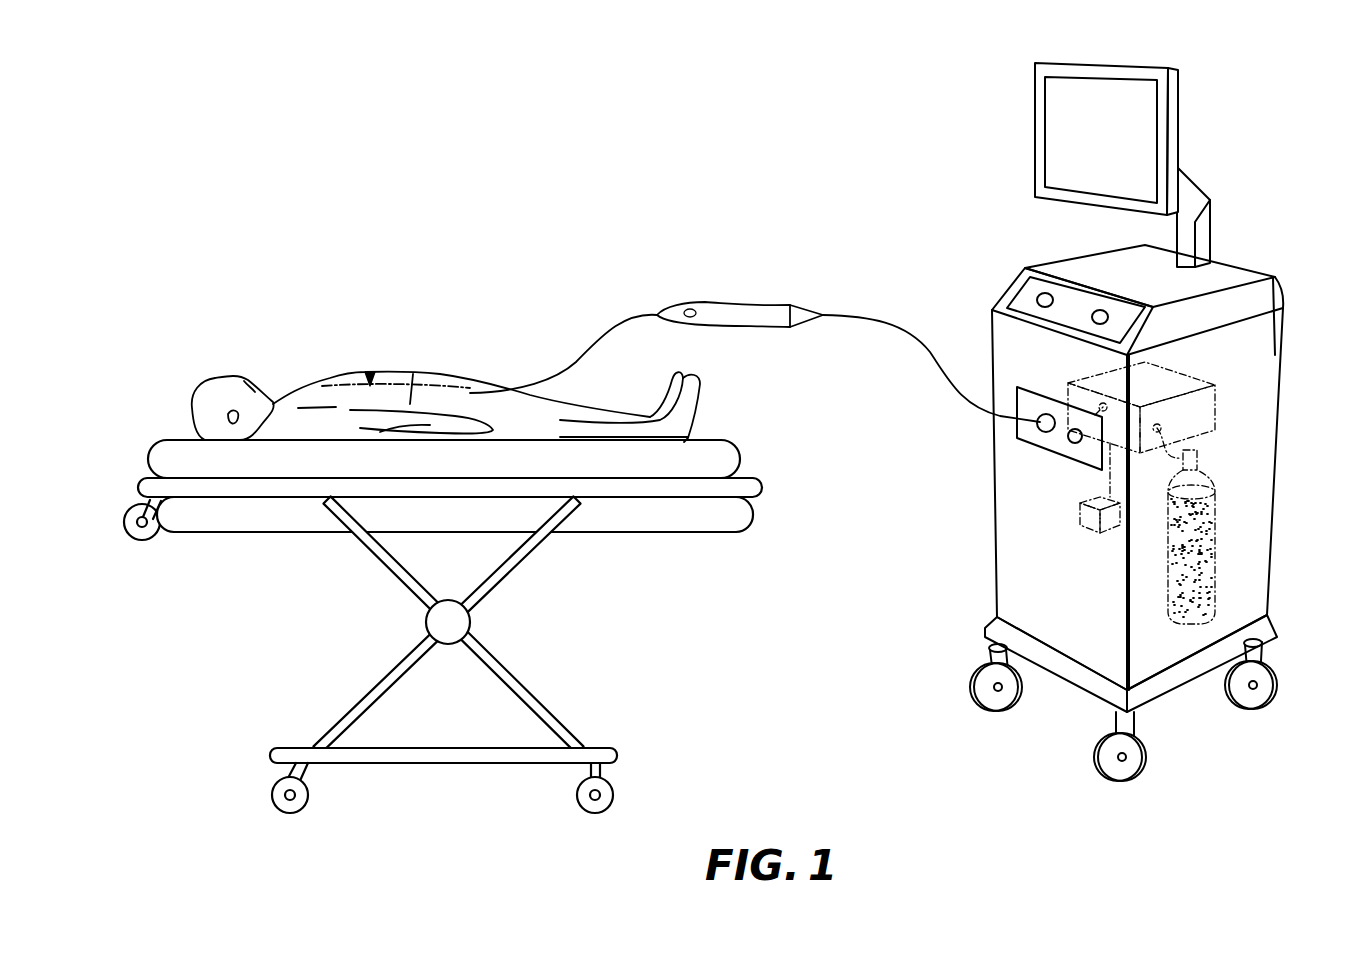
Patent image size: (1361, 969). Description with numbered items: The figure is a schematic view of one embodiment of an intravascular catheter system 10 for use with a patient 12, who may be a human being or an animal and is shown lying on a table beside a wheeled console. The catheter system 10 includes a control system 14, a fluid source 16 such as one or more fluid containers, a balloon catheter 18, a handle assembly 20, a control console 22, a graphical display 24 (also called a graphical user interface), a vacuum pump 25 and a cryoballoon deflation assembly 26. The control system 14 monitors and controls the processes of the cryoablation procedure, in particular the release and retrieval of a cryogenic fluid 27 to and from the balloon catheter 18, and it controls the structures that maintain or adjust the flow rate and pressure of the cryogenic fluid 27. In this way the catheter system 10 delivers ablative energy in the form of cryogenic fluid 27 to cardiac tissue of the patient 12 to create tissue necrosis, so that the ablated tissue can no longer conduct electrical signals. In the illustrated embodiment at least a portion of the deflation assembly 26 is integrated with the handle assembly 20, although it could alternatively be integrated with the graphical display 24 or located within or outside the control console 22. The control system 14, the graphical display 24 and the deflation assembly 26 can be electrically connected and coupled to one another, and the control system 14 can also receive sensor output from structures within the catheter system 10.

The intravascular catheter system 10 is at (826, 96).
The patient 12 is at (330, 372).
The control system 14 is at (1215, 390).
The fluid source 16 is at (1215, 510).
The balloon catheter 18 is at (373, 378).
The handle assembly 20 is at (757, 303).
The control console 22 is at (1047, 262).
The graphical display 24 is at (1033, 90).
The vacuum pump 25 is at (1080, 518).
The cryoballoon deflation assembly 26 is at (690, 266).
The cryogenic fluid 27 is at (1215, 535).